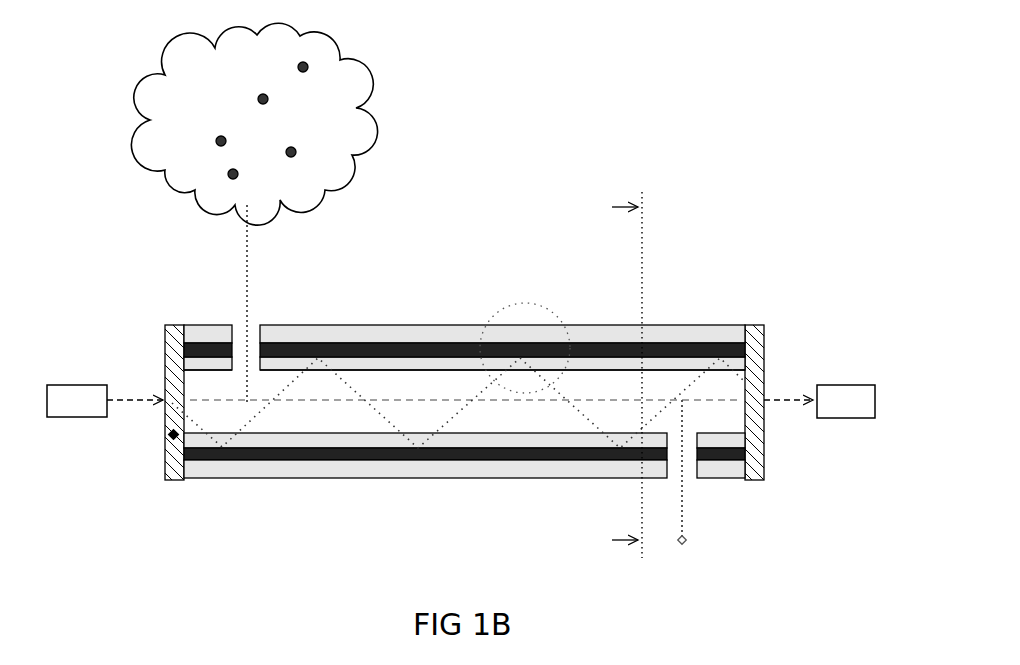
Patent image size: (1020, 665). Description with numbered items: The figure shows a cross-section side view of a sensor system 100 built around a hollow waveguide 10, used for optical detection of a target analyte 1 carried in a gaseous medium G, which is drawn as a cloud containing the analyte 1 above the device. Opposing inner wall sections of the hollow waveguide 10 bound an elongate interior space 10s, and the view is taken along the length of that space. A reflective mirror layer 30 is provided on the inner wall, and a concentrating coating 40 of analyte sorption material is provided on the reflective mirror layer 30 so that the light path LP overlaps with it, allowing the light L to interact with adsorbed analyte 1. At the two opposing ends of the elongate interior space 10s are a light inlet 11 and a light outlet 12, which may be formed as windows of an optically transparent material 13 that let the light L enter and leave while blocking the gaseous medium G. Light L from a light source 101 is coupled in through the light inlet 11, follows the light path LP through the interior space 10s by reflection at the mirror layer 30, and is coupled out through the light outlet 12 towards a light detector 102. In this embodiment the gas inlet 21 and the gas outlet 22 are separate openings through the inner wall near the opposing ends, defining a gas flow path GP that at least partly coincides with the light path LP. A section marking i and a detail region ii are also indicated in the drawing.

The sensor system 100 is at (125, 228).
The target analyte 1 is at (307, 152).
The gaseous medium G is at (202, 101).
The hollow waveguide 10 is at (351, 336).
The elongate interior space 10s is at (392, 384).
The reflective mirror layer 30 is at (452, 346).
The concentrating coating 40 is at (549, 363).
The light inlet 11 is at (151, 371).
The light outlet 12 is at (779, 377).
The optically transparent material 13 is at (168, 448).
The gas inlet 21 is at (241, 321).
The gas outlet 22 is at (691, 483).
The light source 101 is at (105, 401).
The light detector 102 is at (819, 401).
The light L is at (150, 403).
The light path LP is at (248, 420).
The gas flow path GP is at (322, 400).
The section line i is at (627, 365).
The detail region ii is at (525, 347).